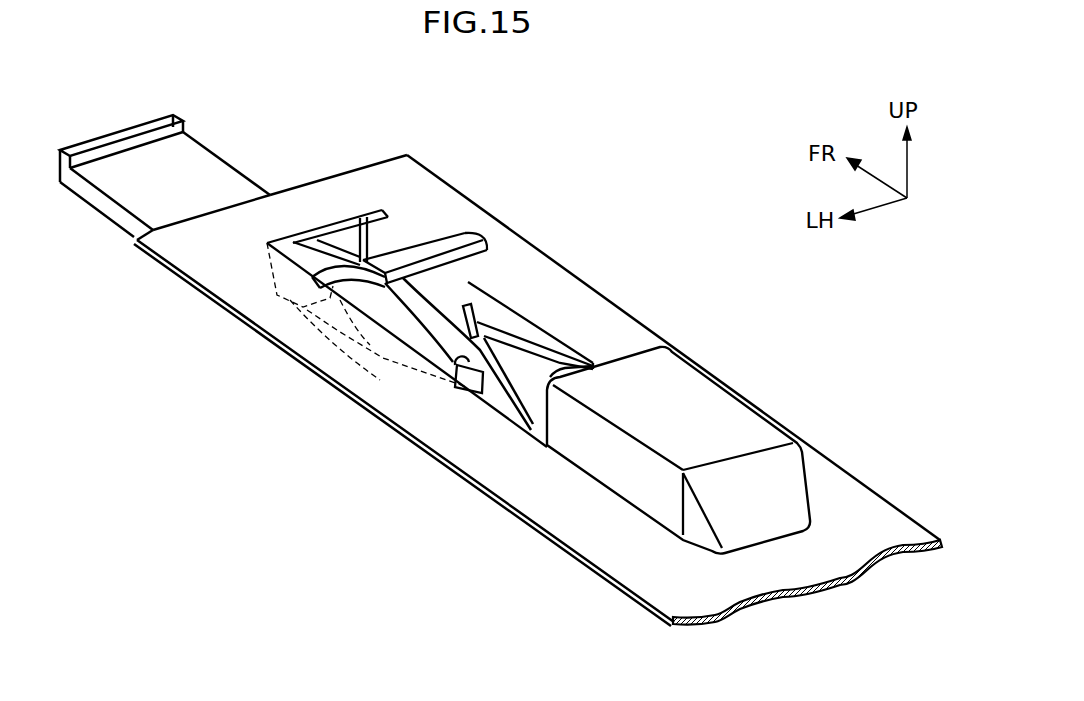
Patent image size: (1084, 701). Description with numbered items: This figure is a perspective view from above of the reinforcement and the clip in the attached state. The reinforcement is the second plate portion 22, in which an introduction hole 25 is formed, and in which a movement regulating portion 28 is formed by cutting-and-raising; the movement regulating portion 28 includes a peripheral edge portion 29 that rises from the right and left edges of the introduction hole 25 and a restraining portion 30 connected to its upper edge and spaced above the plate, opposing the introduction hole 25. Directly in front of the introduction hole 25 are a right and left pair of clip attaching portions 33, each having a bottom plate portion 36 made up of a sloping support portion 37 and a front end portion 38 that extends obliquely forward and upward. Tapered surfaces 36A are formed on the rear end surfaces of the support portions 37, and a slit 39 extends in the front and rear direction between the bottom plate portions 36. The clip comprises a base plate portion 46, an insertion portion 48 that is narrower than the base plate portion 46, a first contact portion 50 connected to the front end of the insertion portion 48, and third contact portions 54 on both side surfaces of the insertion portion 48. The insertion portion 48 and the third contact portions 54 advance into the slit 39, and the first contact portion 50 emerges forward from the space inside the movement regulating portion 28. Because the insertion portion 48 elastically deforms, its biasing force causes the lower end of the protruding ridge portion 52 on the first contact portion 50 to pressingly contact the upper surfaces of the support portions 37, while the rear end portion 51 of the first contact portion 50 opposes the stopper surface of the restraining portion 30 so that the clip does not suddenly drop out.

The second plate portion 22 is at (848, 482).
The introduction hole 25 is at (497, 372).
The movement regulating portion 28 is at (733, 413).
The peripheral edge portion 29 is at (617, 475).
The restraining portion 30 is at (687, 380).
The clip attaching portion 33 is at (467, 310).
The bottom plate portion 36 is at (568, 357).
The tapered surface 36A is at (577, 337).
The support portion 37 is at (540, 337).
The front end portion 38 is at (284, 238).
The slit 39 is at (450, 395).
The base plate portion 46 is at (215, 163).
The insertion portion 48 is at (362, 328).
The first contact portion 50 is at (433, 238).
The rear end portion 51 is at (463, 237).
The protruding ridge portion 52 is at (307, 310).
The third contact portion 54 is at (512, 323).